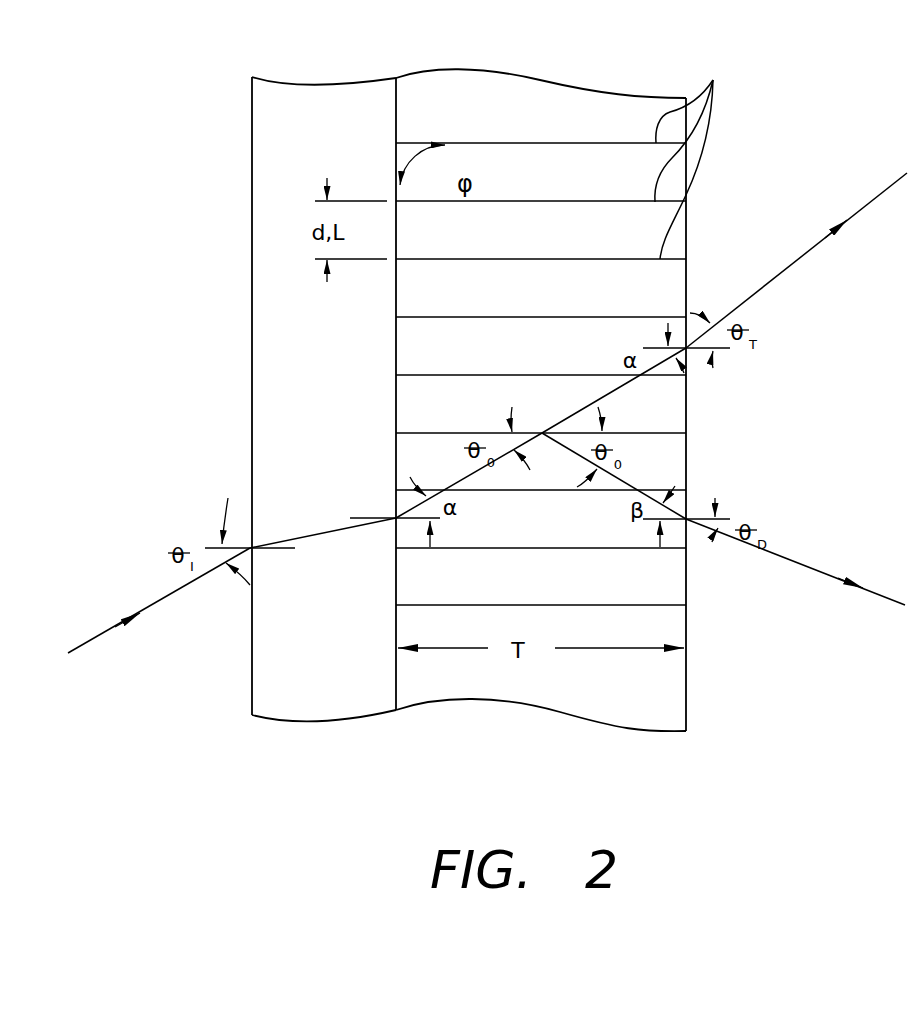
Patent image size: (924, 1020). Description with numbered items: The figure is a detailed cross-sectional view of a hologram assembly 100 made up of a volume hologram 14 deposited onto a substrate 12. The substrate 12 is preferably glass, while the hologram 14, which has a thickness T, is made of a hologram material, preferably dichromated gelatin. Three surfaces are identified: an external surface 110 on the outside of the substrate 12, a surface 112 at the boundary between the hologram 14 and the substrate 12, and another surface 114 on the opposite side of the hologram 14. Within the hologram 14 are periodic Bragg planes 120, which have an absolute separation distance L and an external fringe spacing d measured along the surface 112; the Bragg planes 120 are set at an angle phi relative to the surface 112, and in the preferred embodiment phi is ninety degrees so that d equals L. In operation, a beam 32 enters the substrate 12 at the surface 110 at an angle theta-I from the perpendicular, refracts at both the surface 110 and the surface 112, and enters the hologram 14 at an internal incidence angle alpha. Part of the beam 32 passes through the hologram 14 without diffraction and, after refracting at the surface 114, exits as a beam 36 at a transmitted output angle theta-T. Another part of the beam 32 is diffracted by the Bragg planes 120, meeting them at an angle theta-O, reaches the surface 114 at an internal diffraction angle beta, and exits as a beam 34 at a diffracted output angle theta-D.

The substrate 12 is at (335, 85).
The volume hologram 14 is at (535, 78).
The beam 32 is at (100, 636).
The diffracted beam 34 is at (898, 598).
The transmitted beam 36 is at (885, 189).
The hologram assembly 100 is at (345, 812).
The external surface 110 is at (250, 382).
The surface between hologram and substrate 112 is at (395, 348).
The surface on opposite side of hologram 114 is at (688, 195).
The Bragg planes 120 is at (698, 154).